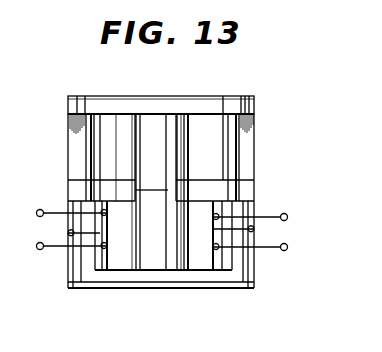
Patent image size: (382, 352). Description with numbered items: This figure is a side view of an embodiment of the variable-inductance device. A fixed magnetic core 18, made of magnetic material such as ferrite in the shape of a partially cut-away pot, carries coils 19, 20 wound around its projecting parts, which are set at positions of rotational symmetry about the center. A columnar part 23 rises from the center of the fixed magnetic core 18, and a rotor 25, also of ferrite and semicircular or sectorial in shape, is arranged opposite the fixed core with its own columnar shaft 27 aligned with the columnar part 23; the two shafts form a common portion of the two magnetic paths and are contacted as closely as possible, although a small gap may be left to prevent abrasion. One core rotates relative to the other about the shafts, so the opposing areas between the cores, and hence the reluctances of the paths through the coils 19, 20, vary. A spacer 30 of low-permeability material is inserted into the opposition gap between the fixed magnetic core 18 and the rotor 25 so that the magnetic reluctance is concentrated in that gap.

The fixed magnetic core 18 is at (105, 278).
The coil 19 is at (56, 210).
The coil 20 is at (270, 212).
The columnar part 23 is at (170, 262).
The rotor 25 is at (203, 112).
The columnar shaft 27 is at (172, 148).
The spacer 30 is at (76, 192).